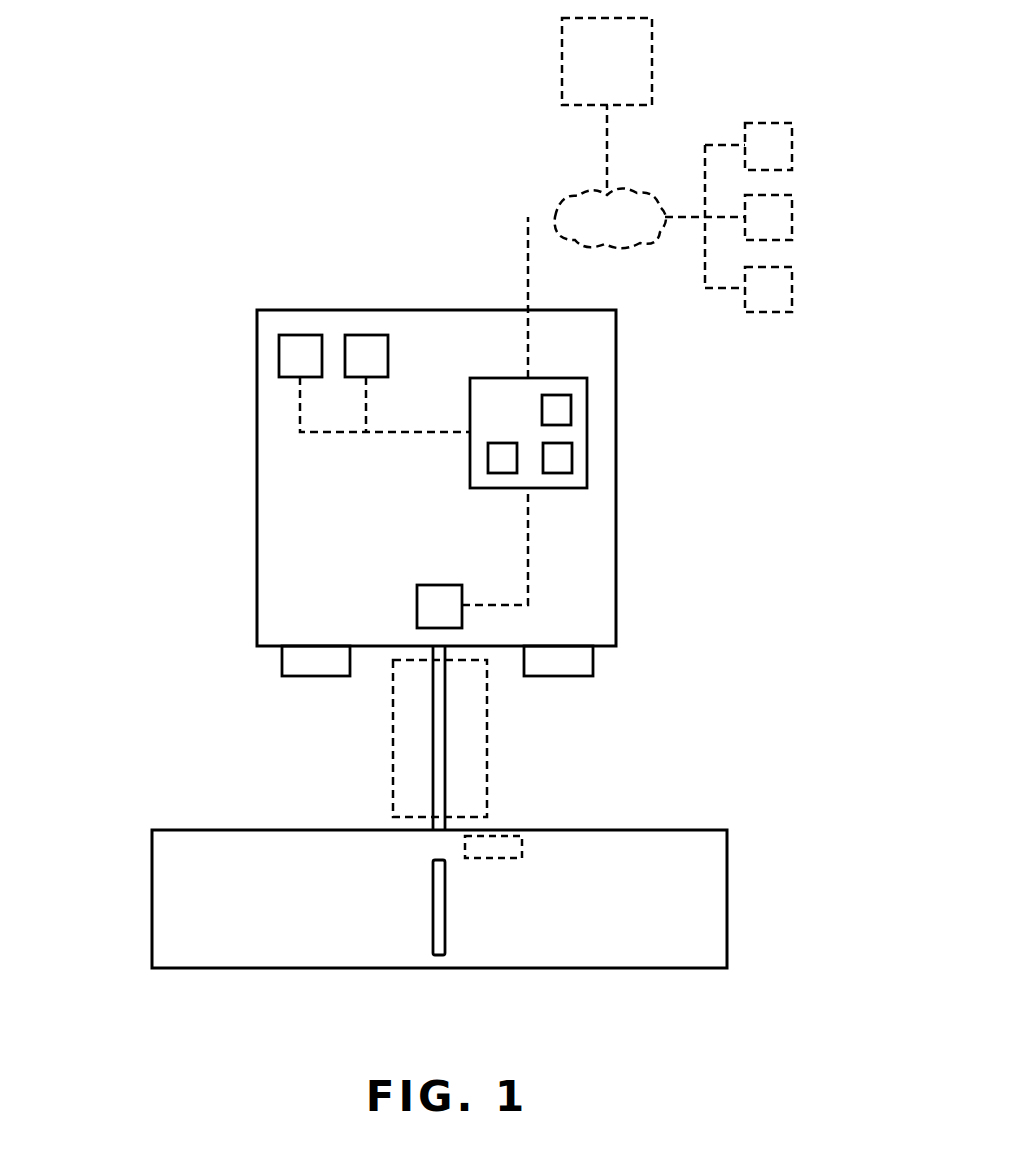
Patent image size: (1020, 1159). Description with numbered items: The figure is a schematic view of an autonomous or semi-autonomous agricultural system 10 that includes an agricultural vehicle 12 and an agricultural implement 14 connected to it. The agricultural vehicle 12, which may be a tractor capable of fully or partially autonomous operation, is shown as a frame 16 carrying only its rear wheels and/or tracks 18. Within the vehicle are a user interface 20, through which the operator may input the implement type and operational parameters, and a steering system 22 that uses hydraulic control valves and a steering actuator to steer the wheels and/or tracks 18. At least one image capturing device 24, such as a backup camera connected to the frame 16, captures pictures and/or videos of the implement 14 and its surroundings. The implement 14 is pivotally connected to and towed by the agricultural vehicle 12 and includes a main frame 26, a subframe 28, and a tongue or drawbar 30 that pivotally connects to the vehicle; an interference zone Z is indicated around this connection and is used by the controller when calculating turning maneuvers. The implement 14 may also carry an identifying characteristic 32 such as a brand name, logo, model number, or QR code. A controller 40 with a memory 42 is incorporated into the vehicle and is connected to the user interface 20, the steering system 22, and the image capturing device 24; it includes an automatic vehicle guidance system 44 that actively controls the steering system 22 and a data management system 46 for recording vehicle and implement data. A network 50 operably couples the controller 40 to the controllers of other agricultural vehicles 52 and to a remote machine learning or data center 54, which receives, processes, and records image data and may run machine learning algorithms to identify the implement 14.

The autonomous or semi-autonomous agricultural system 10 is at (218, 246).
The agricultural vehicle 12 is at (232, 370).
The agricultural implement 14 is at (140, 881).
The frame 16 is at (257, 470).
The wheels and/or tracks 18 is at (282, 668).
The user interface 20 is at (300, 335).
The steering system 22 is at (366, 335).
The image capturing device 24 is at (417, 605).
The main frame 26 is at (233, 968).
The subframe 28 is at (433, 924).
The drawbar 30 is at (433, 740).
The identifying characteristic 32 is at (495, 858).
The controller 40 is at (587, 445).
The memory 42 is at (557, 395).
The automatic vehicle guidance system 44 is at (557, 473).
The data management system 46 is at (498, 473).
The network 50 is at (577, 195).
The other agricultural vehicles 52 is at (792, 147).
The data center 54 is at (562, 62).
The interference zone Z is at (487, 740).